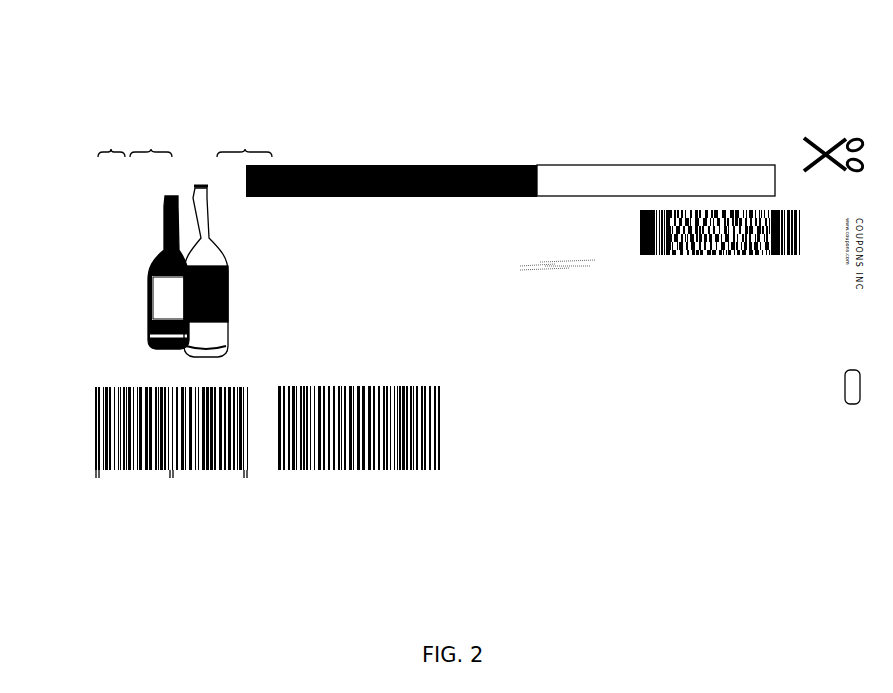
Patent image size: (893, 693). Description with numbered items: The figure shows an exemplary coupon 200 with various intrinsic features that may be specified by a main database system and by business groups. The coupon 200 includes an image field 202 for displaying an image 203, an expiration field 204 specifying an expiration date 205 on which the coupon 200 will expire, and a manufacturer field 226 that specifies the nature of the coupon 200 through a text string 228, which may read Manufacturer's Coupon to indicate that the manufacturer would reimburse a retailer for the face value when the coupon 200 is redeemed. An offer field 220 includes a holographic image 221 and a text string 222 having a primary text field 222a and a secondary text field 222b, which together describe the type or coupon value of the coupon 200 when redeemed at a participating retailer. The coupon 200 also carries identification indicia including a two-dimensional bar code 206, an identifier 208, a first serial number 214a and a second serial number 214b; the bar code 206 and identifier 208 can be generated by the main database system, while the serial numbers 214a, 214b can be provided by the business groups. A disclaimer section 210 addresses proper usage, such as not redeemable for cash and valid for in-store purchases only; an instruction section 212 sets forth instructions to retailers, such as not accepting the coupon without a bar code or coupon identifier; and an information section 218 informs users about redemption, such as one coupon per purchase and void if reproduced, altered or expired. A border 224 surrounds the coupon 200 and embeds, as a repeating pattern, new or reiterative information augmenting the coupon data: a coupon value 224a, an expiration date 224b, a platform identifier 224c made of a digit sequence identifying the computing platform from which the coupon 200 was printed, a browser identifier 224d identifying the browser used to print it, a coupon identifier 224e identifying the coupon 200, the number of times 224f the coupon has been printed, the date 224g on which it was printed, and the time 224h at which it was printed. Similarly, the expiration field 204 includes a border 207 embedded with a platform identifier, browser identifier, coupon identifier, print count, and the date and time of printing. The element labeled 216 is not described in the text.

The coupon 200 is at (214, 60).
The image field 202 is at (75, 205).
The image 203 is at (79, 186).
The expiration field 204 is at (632, 160).
The expiration date 205 is at (756, 179).
The 2D bar code 206 is at (798, 244).
The border 207 is at (634, 200).
The identifier 208 is at (789, 272).
The disclaimer section 210 is at (738, 318).
The instruction section 212 is at (628, 366).
The first serial number 214a is at (222, 481).
The second serial number 214b is at (450, 448).
The consumer instructions and offer code 216 is at (738, 418).
The information section 218 is at (809, 383).
The offer field 220 is at (277, 282).
The holographic image 221 is at (564, 274).
The text string 222 is at (587, 248).
The primary text field 222a is at (343, 249).
The secondary text field 222b is at (404, 277).
The border 224 is at (71, 263).
The coupon value 224a is at (106, 146).
The expiration date 224b is at (151, 147).
The platform identifier 224c is at (197, 158).
The browser identifier 224d is at (453, 158).
The coupon identifier 224e is at (246, 146).
The number of times printed 224f is at (526, 158).
The date printed 224g is at (543, 158).
The time printed 224h is at (314, 158).
The manufacturer field 226 is at (377, 163).
The text string 228 is at (286, 195).